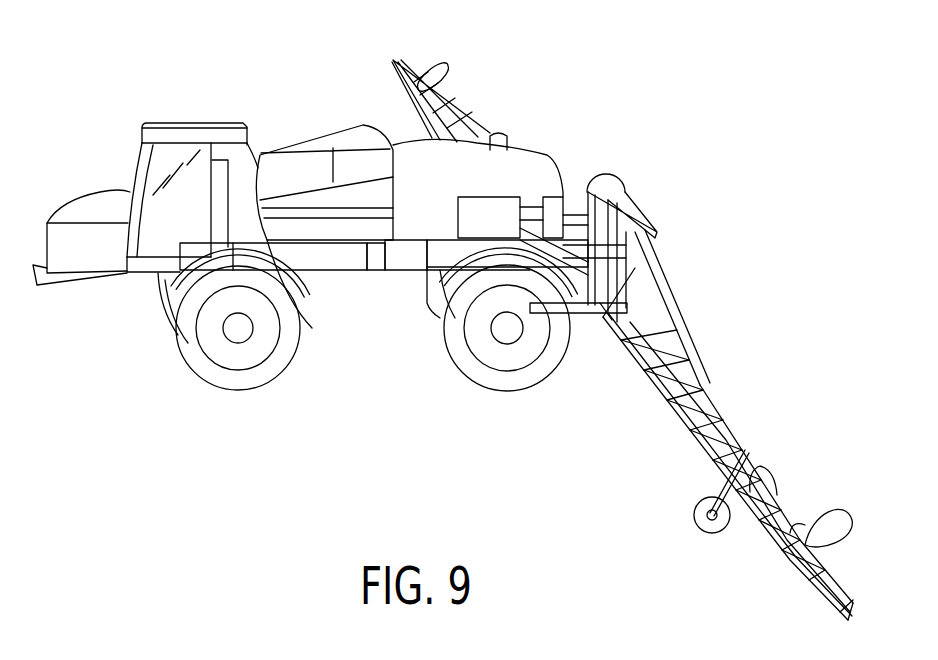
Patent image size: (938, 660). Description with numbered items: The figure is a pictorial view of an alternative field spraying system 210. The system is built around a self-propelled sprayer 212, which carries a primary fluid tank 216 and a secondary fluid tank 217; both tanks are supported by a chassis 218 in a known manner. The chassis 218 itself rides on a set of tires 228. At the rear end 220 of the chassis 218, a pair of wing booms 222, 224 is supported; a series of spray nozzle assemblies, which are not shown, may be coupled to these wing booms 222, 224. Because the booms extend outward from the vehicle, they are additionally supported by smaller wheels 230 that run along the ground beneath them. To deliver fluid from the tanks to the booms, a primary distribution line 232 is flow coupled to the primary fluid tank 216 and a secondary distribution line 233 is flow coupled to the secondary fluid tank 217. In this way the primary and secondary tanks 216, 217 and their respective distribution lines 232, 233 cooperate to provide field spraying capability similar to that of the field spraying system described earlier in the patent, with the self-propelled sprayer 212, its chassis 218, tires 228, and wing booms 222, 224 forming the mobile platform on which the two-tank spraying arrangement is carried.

The field spraying system 210 is at (262, 106).
The self-propelled sprayer 212 is at (118, 214).
The primary fluid tank 216 is at (547, 178).
The secondary fluid tank 217 is at (570, 192).
The chassis 218 is at (348, 262).
The rear end 220 is at (600, 313).
The wing boom 222 is at (452, 118).
The wing boom 224 is at (707, 387).
The tires 228 is at (175, 344).
The wheels 230 is at (705, 528).
The primary distribution line 232 is at (648, 298).
The secondary distribution line 233 is at (440, 135).